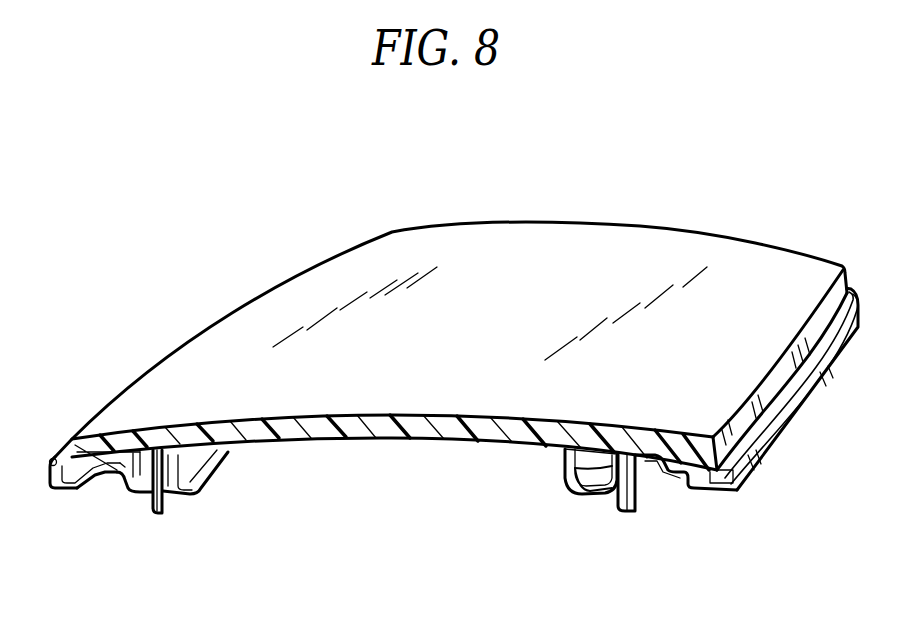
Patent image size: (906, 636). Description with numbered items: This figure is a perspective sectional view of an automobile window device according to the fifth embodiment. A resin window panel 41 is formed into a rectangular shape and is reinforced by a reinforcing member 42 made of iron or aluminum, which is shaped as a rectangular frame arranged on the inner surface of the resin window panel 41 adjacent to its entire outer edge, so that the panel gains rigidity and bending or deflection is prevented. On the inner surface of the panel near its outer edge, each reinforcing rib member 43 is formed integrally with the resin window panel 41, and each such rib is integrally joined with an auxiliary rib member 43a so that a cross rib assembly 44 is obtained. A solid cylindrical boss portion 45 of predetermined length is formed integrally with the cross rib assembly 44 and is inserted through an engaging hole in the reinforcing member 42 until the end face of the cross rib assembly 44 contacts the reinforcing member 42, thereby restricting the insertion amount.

The resin window panel 41 is at (467, 242).
The reinforcing member 42 is at (712, 490).
The reinforcing rib member 43 is at (140, 480).
The auxiliary rib member 43a is at (110, 473).
The cross rib assembly 44 is at (343, 520).
The solid cylindrical boss portion 45 is at (155, 505).